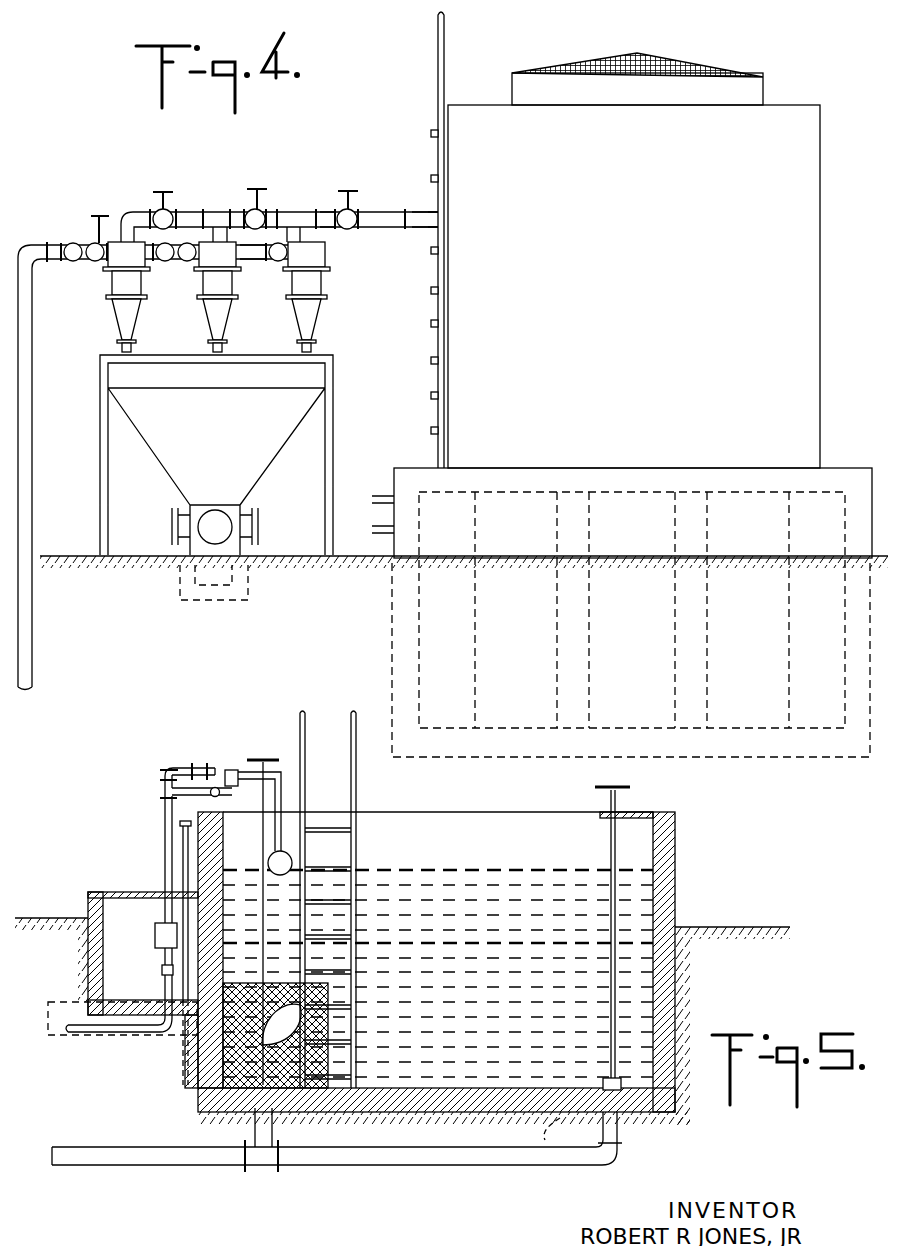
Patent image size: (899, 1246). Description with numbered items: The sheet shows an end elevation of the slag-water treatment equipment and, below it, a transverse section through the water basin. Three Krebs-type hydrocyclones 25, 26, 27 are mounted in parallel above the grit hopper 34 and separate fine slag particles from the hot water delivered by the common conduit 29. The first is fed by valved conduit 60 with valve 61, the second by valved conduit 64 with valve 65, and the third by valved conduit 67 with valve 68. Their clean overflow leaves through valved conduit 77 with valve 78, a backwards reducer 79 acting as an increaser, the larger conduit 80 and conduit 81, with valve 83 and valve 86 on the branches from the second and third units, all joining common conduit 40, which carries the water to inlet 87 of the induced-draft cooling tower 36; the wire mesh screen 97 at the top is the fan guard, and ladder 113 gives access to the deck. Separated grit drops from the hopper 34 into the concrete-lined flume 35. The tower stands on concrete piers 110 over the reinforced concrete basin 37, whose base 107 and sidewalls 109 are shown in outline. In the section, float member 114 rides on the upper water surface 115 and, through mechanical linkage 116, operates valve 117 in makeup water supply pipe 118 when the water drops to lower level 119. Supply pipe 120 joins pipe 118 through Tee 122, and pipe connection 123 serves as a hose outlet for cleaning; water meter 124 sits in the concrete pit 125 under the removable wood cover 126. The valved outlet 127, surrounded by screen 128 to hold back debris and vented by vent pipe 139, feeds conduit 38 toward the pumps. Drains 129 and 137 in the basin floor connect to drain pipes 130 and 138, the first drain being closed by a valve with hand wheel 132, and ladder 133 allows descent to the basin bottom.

In FIG. 4, the hydrocyclone 25 is at (124, 283).
In FIG. 4, the hydrocyclone 26 is at (218, 283).
In FIG. 4, the hydrocyclone 27 is at (305, 283).
In FIG. 4, the common conduit 29 is at (32, 415).
In FIG. 4, the grit hopper 34 is at (272, 440).
In FIG. 4, the flume 35 is at (248, 590).
In FIG. 4, the cooling tower 36 is at (822, 205).
In FIG. 4, the basin 37 is at (838, 466).
In FIG. 5, the conduit 38 is at (50, 1030).
In FIG. 4, the common conduit 40 is at (418, 228).
In FIG. 4, the valved conduit 60 is at (70, 262).
In FIG. 4, the valve 61 is at (96, 262).
In FIG. 4, the valved conduit 64 is at (165, 262).
In FIG. 4, the valve 65 is at (187, 262).
In FIG. 4, the valved conduit 67 is at (255, 260).
In FIG. 4, the valve 68 is at (278, 262).
In FIG. 4, the valved conduit 77 is at (190, 212).
In FIG. 4, the valve 78 is at (160, 210).
In FIG. 4, the reducer 79 is at (252, 209).
In FIG. 4, the conduit 80 is at (278, 210).
In FIG. 4, the conduit 81 is at (328, 215).
In FIG. 4, the valve 83 is at (262, 186).
In FIG. 4, the valve 86 is at (350, 190).
In FIG. 4, the inlet 87 is at (436, 212).
In FIG. 4, the wire mesh screen 97 is at (700, 70).
In FIG. 4, the base 107 is at (680, 748).
In FIG. 5, the base 107 is at (534, 1134).
In FIG. 4, the sidewalls 109 is at (392, 630).
In FIG. 5, the sidewalls 109 is at (200, 1060).
In FIG. 4, the piers 110 is at (676, 635).
In FIG. 4, the ladder 113 is at (432, 325).
In FIG. 5, the float member 114 is at (270, 862).
In FIG. 5, the upper water level 115 is at (500, 870).
In FIG. 5, the mechanical linkage 116 is at (283, 795).
In FIG. 5, the valve 117 is at (223, 793).
In FIG. 5, the makeup water supply pipe 118 is at (225, 788).
In FIG. 5, the lower water level 119 is at (677, 888).
In FIG. 5, the water supply pipe 120 is at (165, 810).
In FIG. 5, the Tee 122 is at (165, 770).
In FIG. 5, the pipe connection 123 is at (185, 765).
In FIG. 5, the water meter 124 is at (157, 920).
In FIG. 5, the pit 125 is at (110, 960).
In FIG. 5, the cover 126 is at (118, 893).
In FIG. 5, the valved outlet 127 is at (310, 1118).
In FIG. 5, the screen 128 is at (330, 1010).
In FIG. 5, the drain 129 is at (250, 1118).
In FIG. 5, the drain pipe 130 is at (100, 1165).
In FIG. 5, the hand wheel 132 is at (600, 787).
In FIG. 5, the ladder 133 is at (355, 830).
In FIG. 5, the drain 137 is at (605, 1085).
In FIG. 5, the drain pipe 138 is at (432, 1165).
In FIG. 5, the vent pipe 139 is at (183, 830).